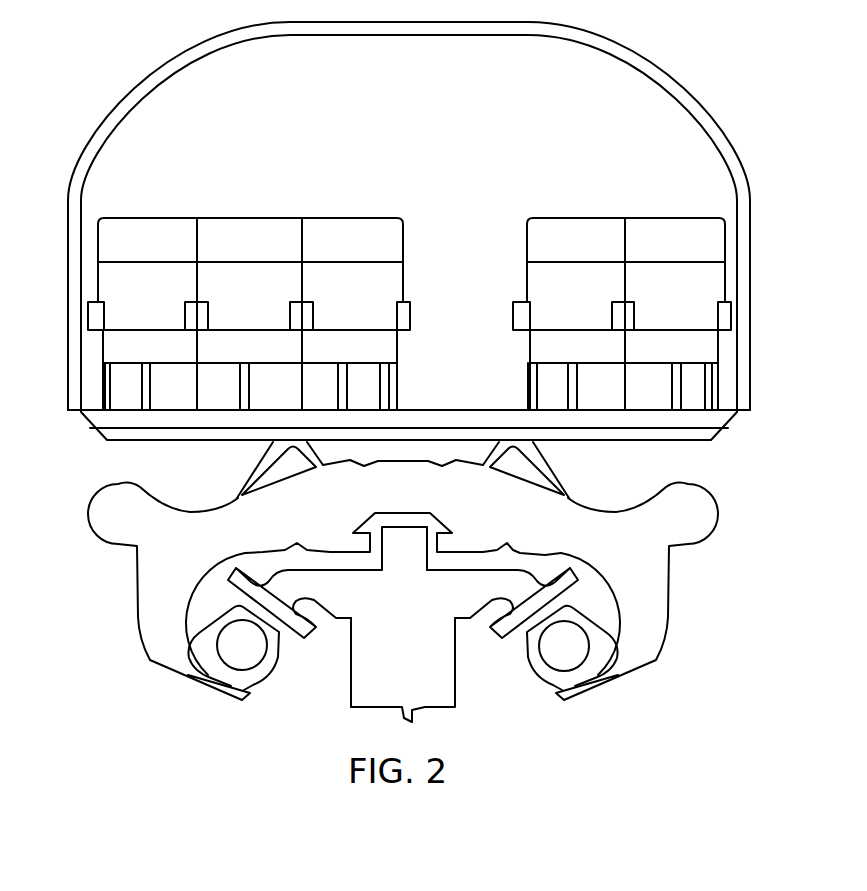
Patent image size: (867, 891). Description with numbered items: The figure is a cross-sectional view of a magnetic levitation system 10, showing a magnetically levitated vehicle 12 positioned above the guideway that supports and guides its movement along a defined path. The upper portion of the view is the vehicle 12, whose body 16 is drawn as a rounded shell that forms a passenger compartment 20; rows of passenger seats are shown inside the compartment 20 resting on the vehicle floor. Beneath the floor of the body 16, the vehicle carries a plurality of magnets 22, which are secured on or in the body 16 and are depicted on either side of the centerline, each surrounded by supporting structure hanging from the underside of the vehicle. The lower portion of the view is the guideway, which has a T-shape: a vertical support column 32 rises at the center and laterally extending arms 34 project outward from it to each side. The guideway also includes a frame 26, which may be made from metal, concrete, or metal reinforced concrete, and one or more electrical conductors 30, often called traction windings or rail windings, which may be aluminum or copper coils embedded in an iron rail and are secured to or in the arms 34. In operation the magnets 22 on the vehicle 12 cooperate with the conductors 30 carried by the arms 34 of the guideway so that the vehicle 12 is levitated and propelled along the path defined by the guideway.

The magnetic levitation system 10 is at (88, 102).
The magnetically levitated vehicle 12 is at (696, 83).
The body 16 is at (141, 73).
The passenger compartment 20 is at (519, 153).
The magnets 22 is at (230, 632).
The frame 26 is at (465, 703).
The electrical conductors 30 is at (283, 693).
The vertical support column 32 is at (351, 707).
The laterally extending arms 34 is at (318, 590).